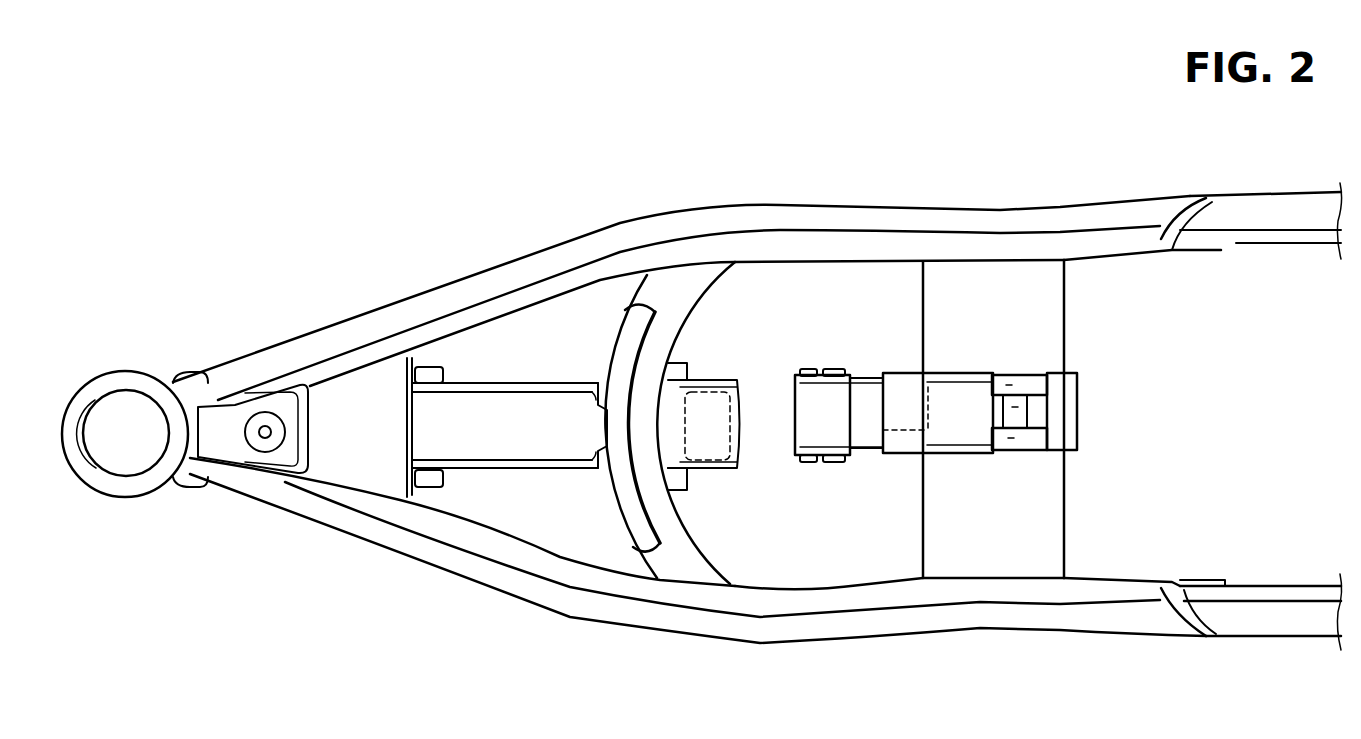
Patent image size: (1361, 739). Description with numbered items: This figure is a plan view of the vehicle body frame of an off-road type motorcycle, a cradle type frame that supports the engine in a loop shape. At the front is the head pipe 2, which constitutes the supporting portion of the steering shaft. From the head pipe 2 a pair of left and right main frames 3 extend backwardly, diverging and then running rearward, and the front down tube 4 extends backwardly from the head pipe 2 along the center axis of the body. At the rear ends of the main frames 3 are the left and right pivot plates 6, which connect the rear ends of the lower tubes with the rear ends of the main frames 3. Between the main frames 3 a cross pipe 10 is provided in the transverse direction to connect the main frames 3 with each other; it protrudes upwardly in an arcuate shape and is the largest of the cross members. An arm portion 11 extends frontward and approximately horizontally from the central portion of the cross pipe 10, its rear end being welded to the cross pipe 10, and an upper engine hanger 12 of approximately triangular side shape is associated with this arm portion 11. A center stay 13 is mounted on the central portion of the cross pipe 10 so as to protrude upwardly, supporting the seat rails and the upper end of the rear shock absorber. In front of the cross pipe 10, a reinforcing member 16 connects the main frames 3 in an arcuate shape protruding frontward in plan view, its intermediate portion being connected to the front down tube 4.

The head pipe 2 is at (112, 384).
The main frames 3 is at (500, 268).
The front down tube 4 is at (532, 440).
The pivot plates 6 is at (1234, 243).
The cross pipe 10 is at (1066, 326).
The arm portion 11 is at (870, 428).
The upper engine hanger 12 is at (820, 460).
The center stay 13 is at (1067, 419).
The reinforcing member 16 is at (683, 298).